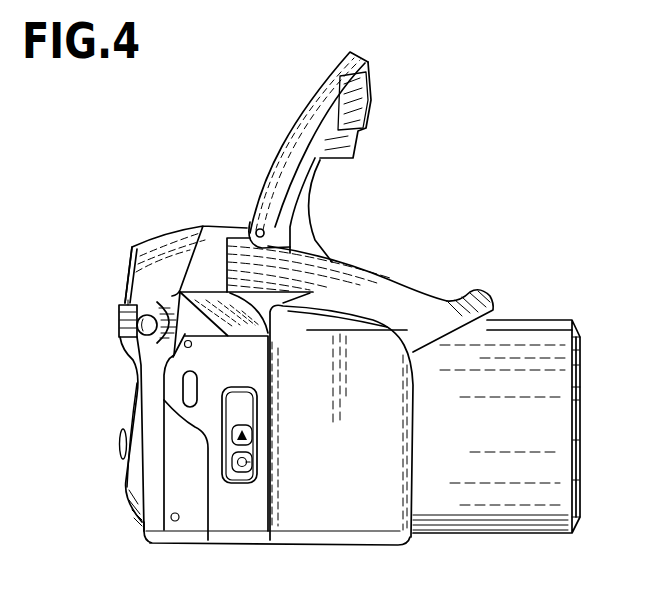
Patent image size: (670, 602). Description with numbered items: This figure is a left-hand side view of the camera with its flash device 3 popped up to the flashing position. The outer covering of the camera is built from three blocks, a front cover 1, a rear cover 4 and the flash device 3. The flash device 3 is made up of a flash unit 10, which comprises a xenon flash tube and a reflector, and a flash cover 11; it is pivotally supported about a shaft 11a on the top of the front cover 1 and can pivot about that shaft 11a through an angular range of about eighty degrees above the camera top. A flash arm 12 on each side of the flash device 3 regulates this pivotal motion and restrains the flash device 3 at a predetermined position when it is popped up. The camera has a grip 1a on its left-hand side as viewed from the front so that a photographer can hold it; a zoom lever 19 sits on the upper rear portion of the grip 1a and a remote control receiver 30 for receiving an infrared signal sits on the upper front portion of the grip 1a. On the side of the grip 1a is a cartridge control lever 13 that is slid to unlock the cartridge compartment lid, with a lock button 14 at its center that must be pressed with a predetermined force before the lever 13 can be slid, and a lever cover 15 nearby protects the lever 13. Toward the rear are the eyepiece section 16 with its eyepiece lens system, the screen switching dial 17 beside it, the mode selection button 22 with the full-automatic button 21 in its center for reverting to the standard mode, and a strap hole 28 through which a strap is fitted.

The front cover 1 is at (530, 350).
The grip 1a is at (388, 518).
The flash device 3 is at (312, 152).
The rear cover 4 is at (157, 252).
The flash unit 10 is at (357, 100).
The flash cover 11 is at (323, 102).
The shaft 11a is at (257, 229).
The flash arm 12 is at (297, 195).
The cartridge control lever 13 is at (232, 437).
The lock button 14 is at (252, 467).
The lever cover 15 is at (195, 500).
The eyepiece section 16 is at (118, 258).
The screen switching dial 17 is at (127, 307).
The zoom lever 19 is at (124, 355).
The full-automatic button 21 is at (121, 448).
The mode selection button 22 is at (130, 416).
The strap hole 28 is at (190, 405).
The remote control receiver 30 is at (413, 350).